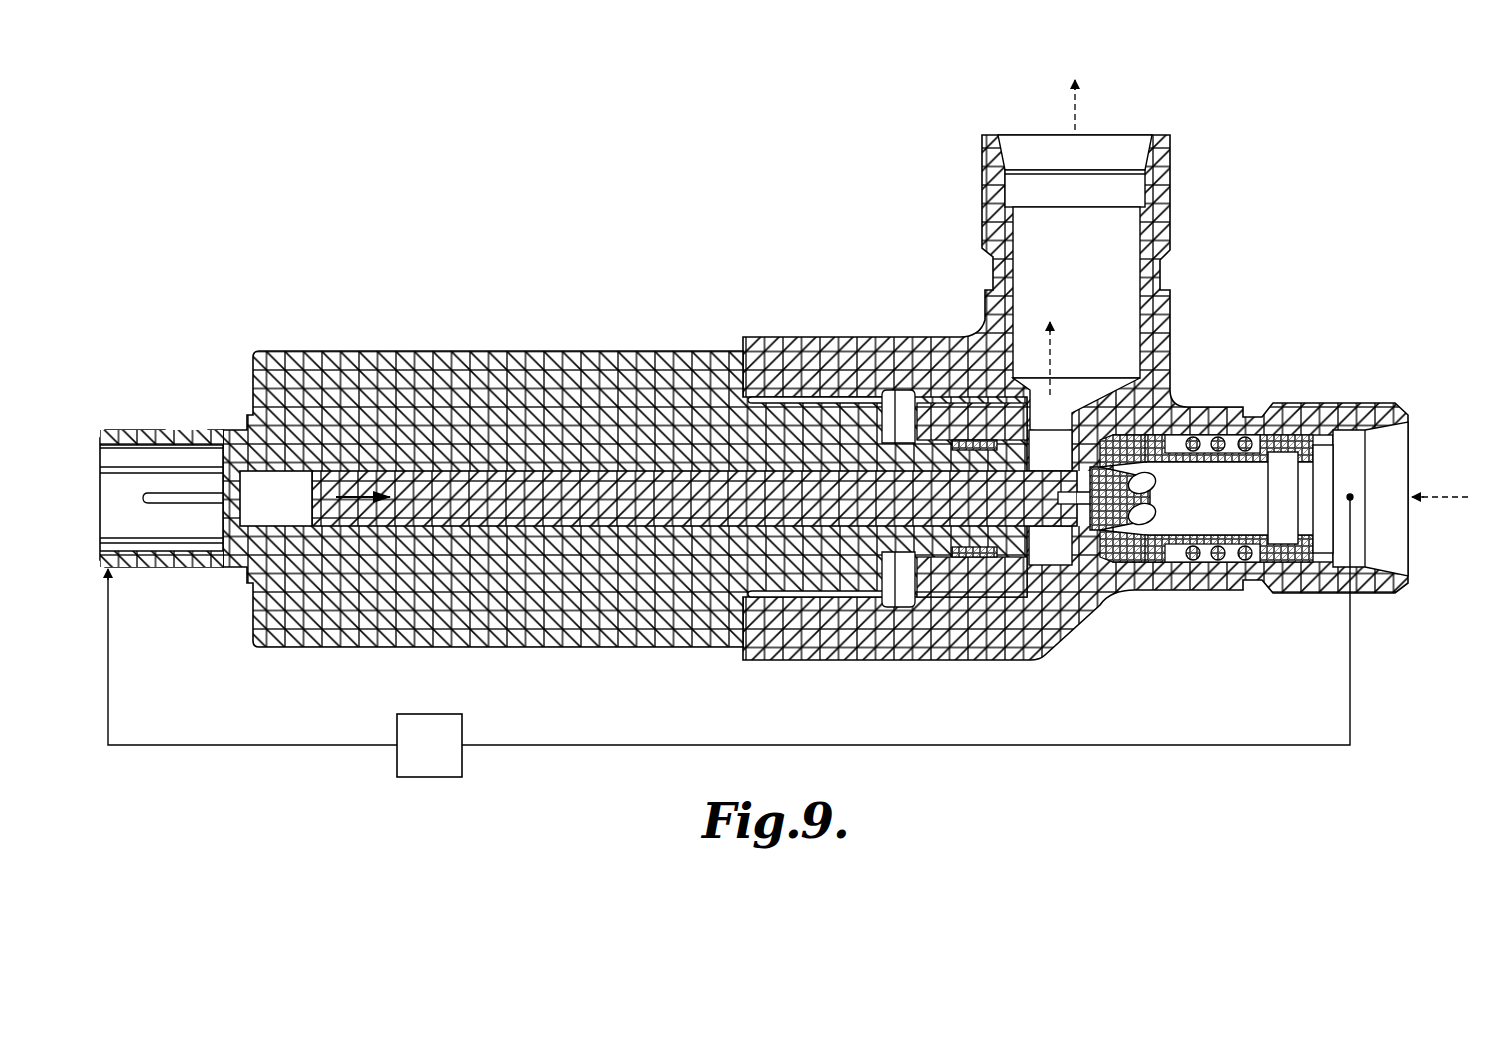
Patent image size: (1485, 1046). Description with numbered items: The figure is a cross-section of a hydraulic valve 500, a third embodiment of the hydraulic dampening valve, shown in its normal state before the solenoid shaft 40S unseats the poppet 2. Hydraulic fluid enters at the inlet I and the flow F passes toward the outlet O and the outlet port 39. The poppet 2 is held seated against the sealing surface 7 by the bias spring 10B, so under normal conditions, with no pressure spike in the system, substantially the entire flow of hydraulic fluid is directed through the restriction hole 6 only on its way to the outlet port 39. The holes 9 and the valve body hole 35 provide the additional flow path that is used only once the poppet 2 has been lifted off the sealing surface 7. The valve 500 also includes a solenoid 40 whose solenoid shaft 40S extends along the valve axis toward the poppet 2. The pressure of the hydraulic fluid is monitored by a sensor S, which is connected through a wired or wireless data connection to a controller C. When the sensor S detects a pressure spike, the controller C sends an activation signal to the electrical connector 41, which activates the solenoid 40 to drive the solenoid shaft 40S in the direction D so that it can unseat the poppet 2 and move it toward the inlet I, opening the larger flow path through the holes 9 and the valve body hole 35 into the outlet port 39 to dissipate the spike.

The hydraulic valve 500 is at (582, 124).
The solenoid 40 is at (462, 355).
The solenoid shaft 40S is at (550, 515).
The electrical connector 41 is at (150, 522).
The outlet port 39 is at (1170, 205).
The valve body hole 35 is at (1085, 513).
The poppet 2 is at (1160, 430).
The bias spring 10B is at (1220, 440).
The holes 9 is at (1180, 540).
The sealing surface 7 is at (1082, 545).
The restriction hole 6 is at (1140, 522).
The direction D is at (365, 497).
The outlet O is at (1118, 146).
The inlet I is at (1408, 450).
The flow of hydraulic fluid F is at (1259, 288).
The sensor S is at (1350, 497).
The controller C is at (729, 638).